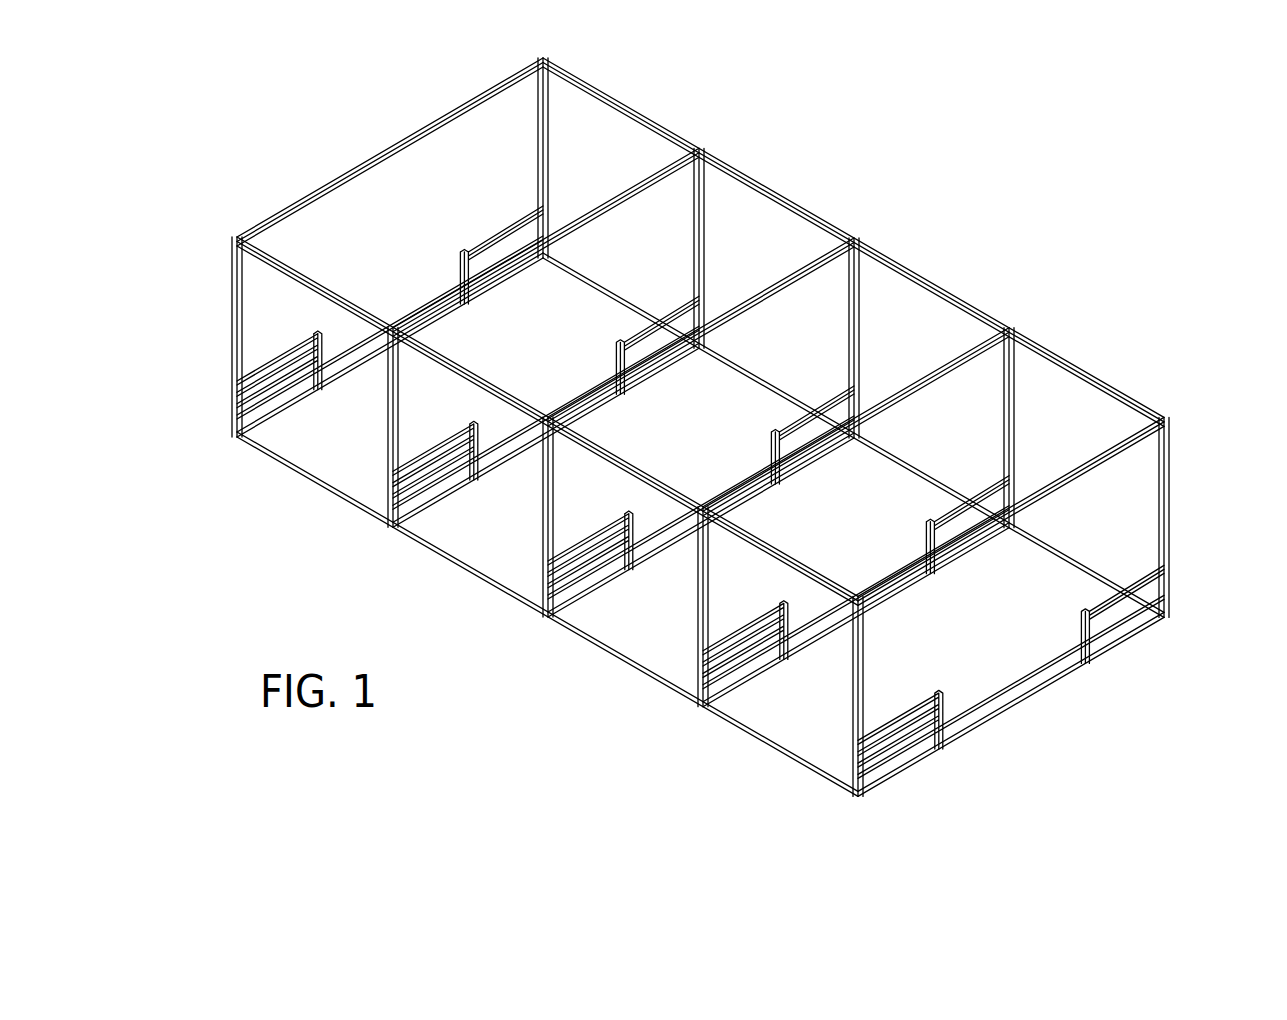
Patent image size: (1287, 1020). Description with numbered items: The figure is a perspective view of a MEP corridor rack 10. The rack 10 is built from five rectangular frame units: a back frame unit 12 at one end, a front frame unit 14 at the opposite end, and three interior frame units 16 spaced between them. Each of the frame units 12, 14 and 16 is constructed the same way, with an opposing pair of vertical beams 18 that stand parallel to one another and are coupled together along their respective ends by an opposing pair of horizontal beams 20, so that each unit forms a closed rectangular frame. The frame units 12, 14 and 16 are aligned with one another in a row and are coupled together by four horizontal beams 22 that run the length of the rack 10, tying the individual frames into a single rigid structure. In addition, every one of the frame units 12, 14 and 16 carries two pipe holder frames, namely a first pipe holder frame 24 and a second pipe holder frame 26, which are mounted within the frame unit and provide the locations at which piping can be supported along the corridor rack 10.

The MEP corridor rack 10 is at (881, 191).
The back frame unit 12 is at (210, 347).
The front frame unit 14 is at (1182, 513).
The interior frame unit 16 is at (710, 198).
The vertical beam 18 is at (550, 153).
The horizontal beam 20 is at (386, 152).
The horizontal beam 22 is at (634, 109).
The first pipe holder frame 24 is at (284, 339).
The second pipe holder frame 26 is at (455, 254).